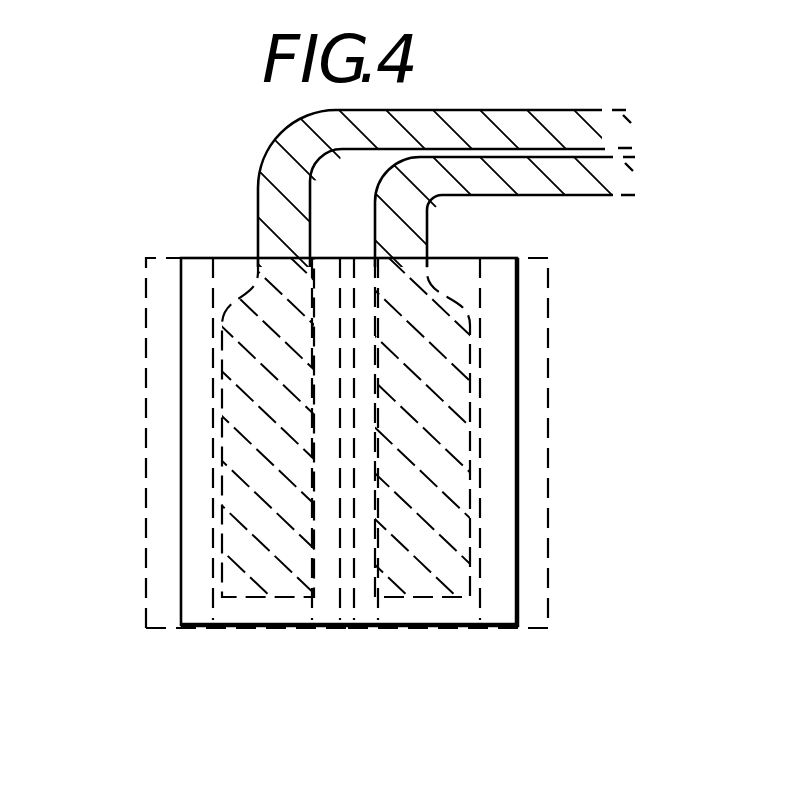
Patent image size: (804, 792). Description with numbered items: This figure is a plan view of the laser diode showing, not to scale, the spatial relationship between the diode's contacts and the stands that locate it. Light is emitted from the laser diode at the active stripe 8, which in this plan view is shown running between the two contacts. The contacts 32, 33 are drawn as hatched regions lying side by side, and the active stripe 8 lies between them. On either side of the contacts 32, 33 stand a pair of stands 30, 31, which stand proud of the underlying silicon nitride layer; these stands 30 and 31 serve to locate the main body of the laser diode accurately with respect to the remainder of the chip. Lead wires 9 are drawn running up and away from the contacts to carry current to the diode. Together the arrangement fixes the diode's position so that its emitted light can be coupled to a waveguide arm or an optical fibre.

The lead wires 9 is at (232, 270).
The stand 30 is at (158, 440).
The stand 31 is at (540, 413).
The contact 32 is at (285, 580).
The contact 33 is at (442, 573).
The active stripe 8 is at (347, 593).